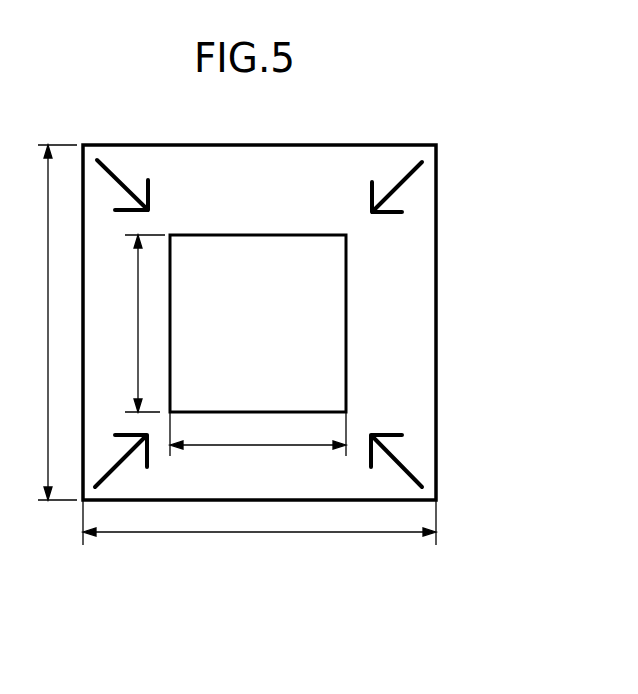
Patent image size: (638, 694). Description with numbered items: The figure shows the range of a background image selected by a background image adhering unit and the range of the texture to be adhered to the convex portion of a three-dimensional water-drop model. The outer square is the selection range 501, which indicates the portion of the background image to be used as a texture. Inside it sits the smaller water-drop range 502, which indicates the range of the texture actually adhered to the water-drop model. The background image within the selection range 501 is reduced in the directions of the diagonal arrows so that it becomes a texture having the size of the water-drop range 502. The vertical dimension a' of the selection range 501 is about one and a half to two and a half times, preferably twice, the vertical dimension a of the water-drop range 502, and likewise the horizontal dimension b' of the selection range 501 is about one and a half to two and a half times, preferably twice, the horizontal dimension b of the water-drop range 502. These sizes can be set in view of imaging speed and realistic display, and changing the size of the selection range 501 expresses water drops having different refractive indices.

The selection range 501 is at (413, 280).
The water-drop range 502 is at (330, 345).
The vertical dimension of the water-drop range a is at (139, 323).
The horizontal dimension of the water-drop range b is at (258, 445).
The vertical dimension of the selection range a' is at (47, 322).
The horizontal dimension of the selection range b' is at (259, 534).